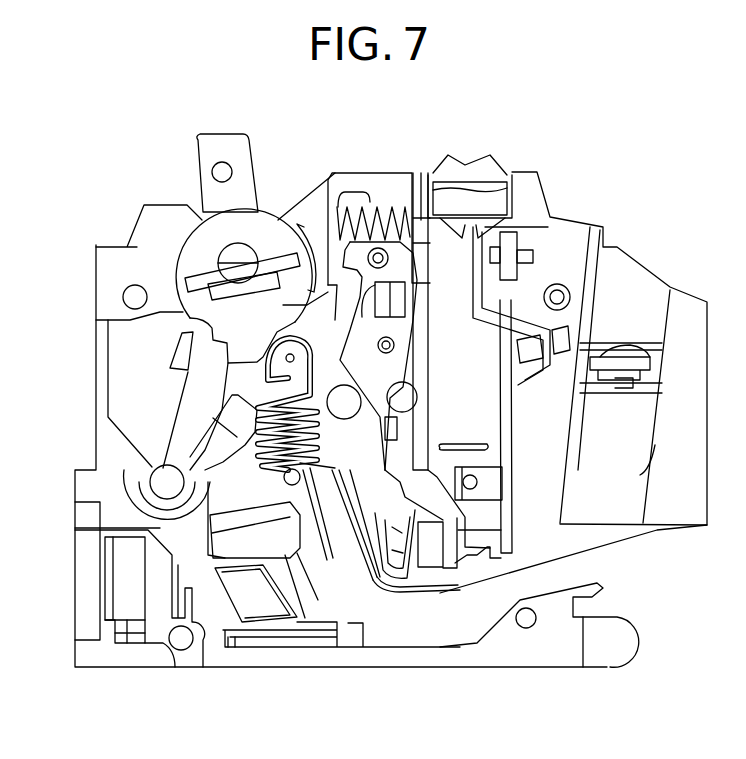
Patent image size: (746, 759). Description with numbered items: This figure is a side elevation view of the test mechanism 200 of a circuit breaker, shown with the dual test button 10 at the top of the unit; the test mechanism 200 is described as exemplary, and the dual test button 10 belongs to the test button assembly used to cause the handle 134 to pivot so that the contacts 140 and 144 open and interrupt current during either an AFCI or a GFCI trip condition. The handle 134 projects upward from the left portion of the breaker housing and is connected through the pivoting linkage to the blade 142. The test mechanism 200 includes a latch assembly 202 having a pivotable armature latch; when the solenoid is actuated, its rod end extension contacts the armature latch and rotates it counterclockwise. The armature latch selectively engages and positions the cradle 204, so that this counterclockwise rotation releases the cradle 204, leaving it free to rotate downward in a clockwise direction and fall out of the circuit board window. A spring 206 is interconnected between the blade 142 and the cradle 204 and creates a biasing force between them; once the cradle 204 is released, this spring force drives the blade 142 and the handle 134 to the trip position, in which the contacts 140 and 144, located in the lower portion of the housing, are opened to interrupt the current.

The handle 134 is at (217, 143).
The dual test button 10 is at (462, 152).
The spring 206 is at (160, 474).
The latch assembly 202 is at (466, 432).
The cradle 204 is at (383, 592).
The contact 140 is at (300, 553).
The contact 144 is at (322, 560).
The blade 142 is at (333, 542).
The test mechanism 200 is at (383, 617).